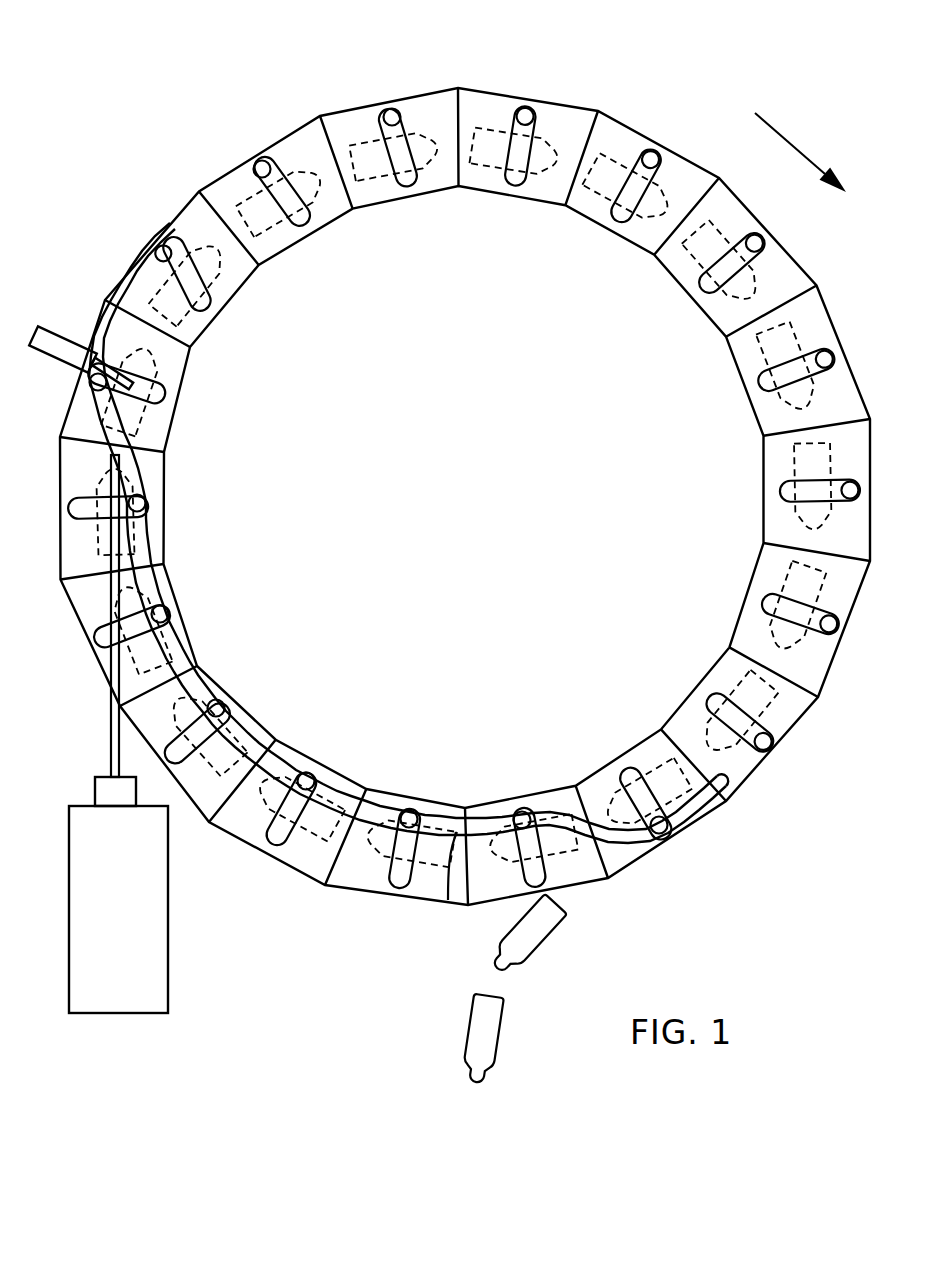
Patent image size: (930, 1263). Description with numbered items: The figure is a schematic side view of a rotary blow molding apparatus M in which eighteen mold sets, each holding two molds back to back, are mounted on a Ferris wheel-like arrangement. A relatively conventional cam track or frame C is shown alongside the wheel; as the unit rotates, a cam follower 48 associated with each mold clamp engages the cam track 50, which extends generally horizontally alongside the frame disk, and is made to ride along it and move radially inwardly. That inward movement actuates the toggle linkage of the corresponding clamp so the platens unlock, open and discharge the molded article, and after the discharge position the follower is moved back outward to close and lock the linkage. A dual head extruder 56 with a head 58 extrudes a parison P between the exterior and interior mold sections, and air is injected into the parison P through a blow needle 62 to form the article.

The rotary blow molding apparatus M is at (527, 73).
The cam track or frame C is at (448, 825).
The parison P is at (110, 738).
The cam follower 48 is at (660, 834).
The cam track 50 is at (703, 803).
The dual head extruder 56 is at (135, 920).
The extruder head 58 is at (100, 789).
The blow needle 62 is at (42, 326).